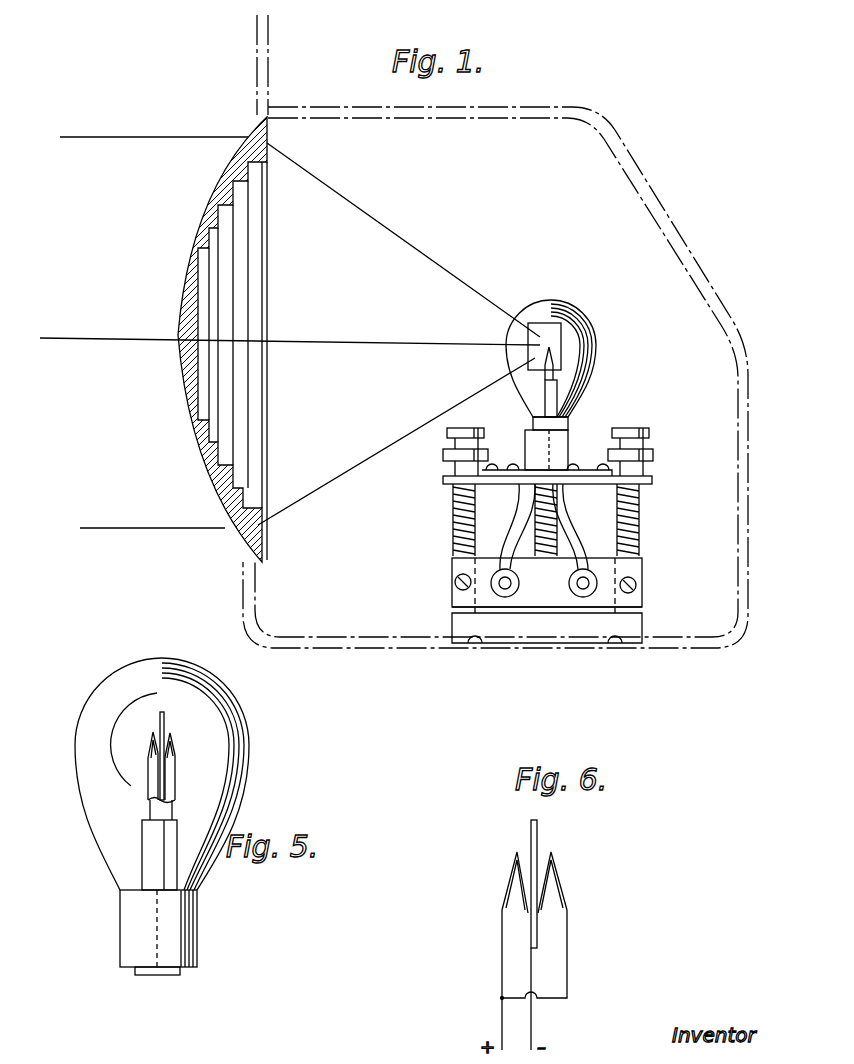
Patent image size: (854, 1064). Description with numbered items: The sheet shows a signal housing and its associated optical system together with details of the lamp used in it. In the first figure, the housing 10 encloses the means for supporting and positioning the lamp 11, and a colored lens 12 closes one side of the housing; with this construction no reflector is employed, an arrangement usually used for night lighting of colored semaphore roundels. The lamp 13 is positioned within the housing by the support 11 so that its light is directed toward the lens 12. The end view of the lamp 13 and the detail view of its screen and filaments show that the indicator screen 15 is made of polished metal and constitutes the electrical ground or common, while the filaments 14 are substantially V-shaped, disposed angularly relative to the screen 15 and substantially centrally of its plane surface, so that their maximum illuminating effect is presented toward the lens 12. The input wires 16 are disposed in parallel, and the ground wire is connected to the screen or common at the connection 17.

In FIG. 1, the housing 10 is at (633, 180).
In FIG. 1, the means for supporting and positioning the lamp 11 is at (557, 598).
In FIG. 1, the lens 12 is at (210, 200).
In FIG. 1, the lamp 13 is at (586, 303).
In FIG. 5, the lamp 13 is at (80, 742).
In FIG. 5, the filaments 14 is at (175, 745).
In FIG. 6, the filaments 14 is at (568, 886).
In FIG. 5, the indicator screen 15 is at (163, 712).
In FIG. 6, the indicator screen 15 is at (538, 834).
In FIG. 5, the input wires 16 is at (150, 793).
In FIG. 6, the input wires 16 is at (568, 968).
In FIG. 6, the ground wire connection 17 is at (532, 1033).